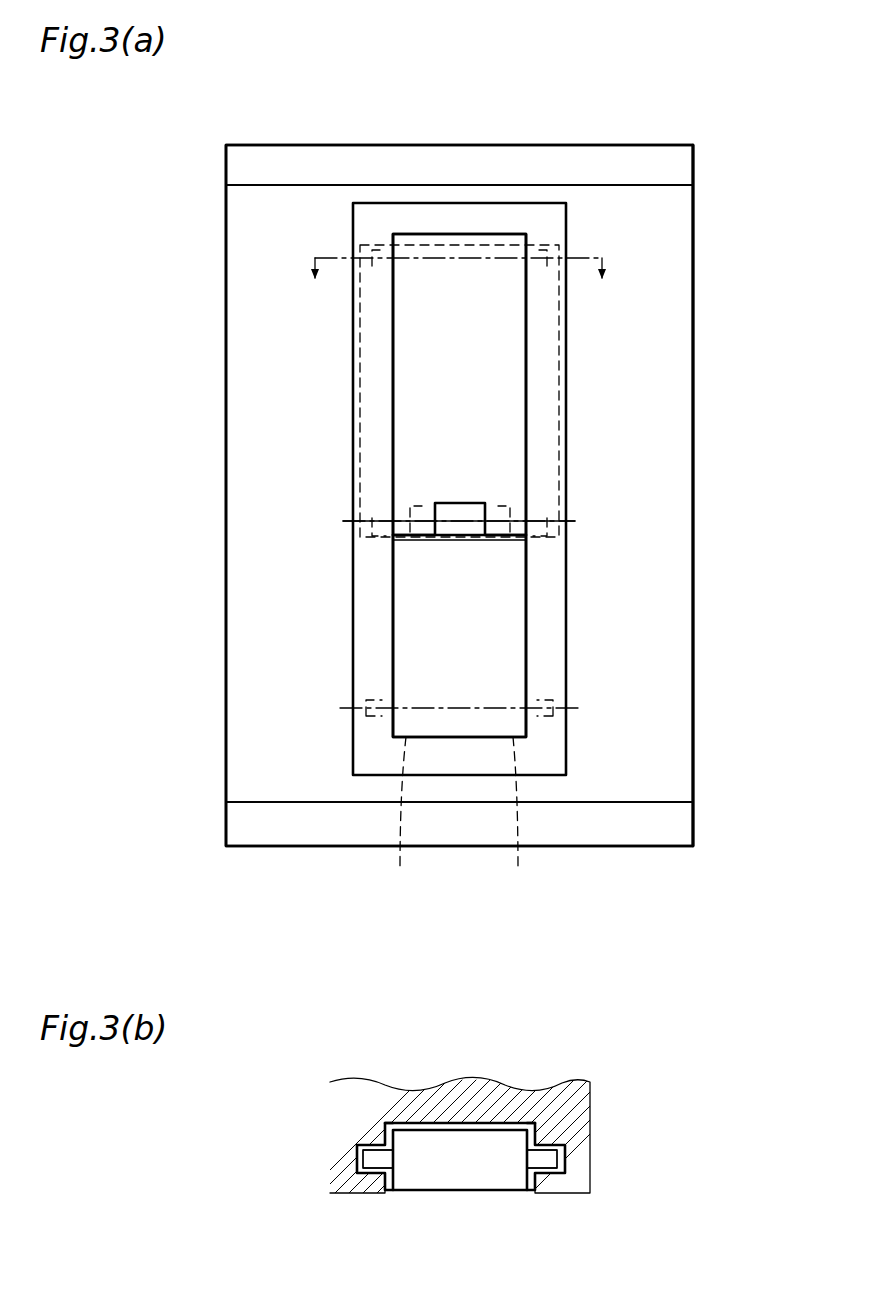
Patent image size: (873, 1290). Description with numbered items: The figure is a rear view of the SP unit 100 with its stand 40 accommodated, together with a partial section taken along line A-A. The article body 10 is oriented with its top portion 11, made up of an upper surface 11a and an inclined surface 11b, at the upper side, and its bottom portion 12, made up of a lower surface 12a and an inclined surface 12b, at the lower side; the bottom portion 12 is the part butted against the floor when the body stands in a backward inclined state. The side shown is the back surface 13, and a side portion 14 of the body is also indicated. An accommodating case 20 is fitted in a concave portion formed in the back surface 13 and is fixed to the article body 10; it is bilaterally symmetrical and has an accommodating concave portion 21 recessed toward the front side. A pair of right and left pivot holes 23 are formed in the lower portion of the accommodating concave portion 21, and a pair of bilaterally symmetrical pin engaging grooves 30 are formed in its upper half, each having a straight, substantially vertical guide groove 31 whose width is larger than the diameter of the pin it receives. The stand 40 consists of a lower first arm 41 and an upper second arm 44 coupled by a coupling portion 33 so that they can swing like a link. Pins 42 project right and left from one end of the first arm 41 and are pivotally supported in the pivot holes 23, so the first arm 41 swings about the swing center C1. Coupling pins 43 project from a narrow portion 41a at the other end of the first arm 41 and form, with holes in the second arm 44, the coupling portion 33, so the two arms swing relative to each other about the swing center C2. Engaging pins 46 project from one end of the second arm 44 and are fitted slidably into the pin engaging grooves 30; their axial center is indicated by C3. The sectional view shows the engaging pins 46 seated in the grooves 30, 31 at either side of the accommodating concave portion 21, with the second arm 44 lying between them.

In FIG. 3A, the SP unit 100 is at (204, 53).
In FIG. 3A, the article body 10 is at (689, 142).
In FIG. 3A, the top portion 11 is at (395, 68).
In FIG. 3A, the upper surface 11a is at (348, 145).
In FIG. 3A, the inclined surface 11b is at (297, 160).
In FIG. 3A, the bottom portion 12 is at (350, 924).
In FIG. 3A, the lower surface 12a is at (353, 847).
In FIG. 3A, the inclined surface 12b is at (287, 830).
In FIG. 3A, the back surface 13 is at (248, 770).
In FIG. 3A, the side 14 is at (693, 297).
In FIG. 3A, the accommodating case 20 is at (531, 202).
In FIG. 3B, the accommodating concave portion 21 is at (449, 1123).
In FIG. 3A, the pivot holes 23 is at (458, 817).
In FIG. 3A, the pin engaging grooves 30 is at (372, 398).
In FIG. 3B, the pin engaging grooves 30 is at (371, 1143).
In FIG. 3B, the guide groove 31 is at (549, 1143).
In FIG. 3A, the coupling portion 33 is at (386, 528).
In FIG. 3A, the stand 40 is at (478, 233).
In FIG. 3A, the first arm 41 is at (510, 590).
In FIG. 3A, the narrow portion 41a is at (460, 502).
In FIG. 3A, the pins 42 is at (360, 690).
In FIG. 3A, the coupling pins 43 is at (395, 490).
In FIG. 3A, the second arm 44 is at (510, 355).
In FIG. 3B, the second arm 44 is at (460, 1192).
In FIG. 3A, the engaging pins 46 is at (360, 245).
In FIG. 3B, the engaging pins 46 is at (365, 1160).
In FIG. 3A, the swing center C1 is at (573, 708).
In FIG. 3A, the swing center C2 is at (573, 521).
In FIG. 3A, the axial center C3 is at (573, 258).